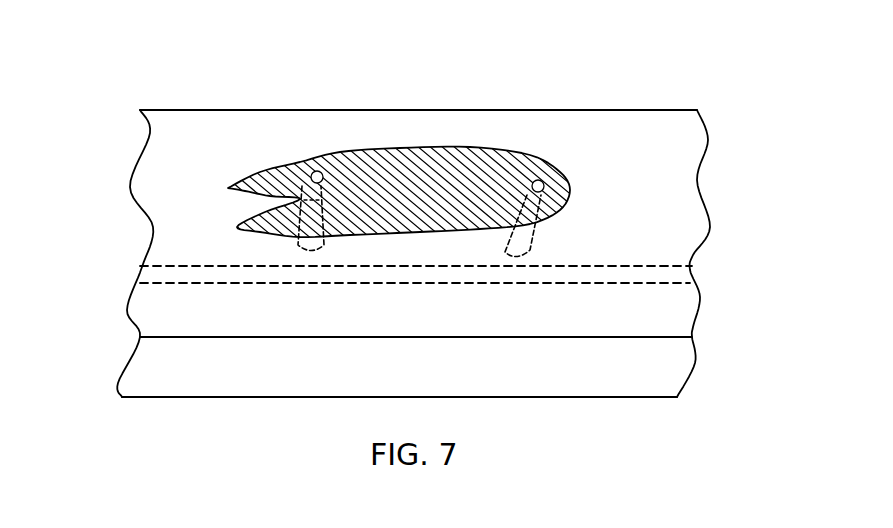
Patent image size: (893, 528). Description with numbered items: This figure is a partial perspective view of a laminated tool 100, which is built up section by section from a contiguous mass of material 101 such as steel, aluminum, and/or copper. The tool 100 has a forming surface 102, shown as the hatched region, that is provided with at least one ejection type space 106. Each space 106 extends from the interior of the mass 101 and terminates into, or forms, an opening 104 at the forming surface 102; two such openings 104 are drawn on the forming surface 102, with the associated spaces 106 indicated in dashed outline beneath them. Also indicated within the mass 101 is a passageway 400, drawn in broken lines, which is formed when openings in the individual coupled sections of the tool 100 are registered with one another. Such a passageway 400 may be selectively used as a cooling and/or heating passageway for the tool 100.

The laminated tool 100 is at (640, 78).
The contiguous mass of material 101 is at (220, 317).
The forming surface 102 is at (421, 207).
The opening 104 is at (314, 171).
The ejection type space 106 is at (308, 250).
The passageway 400 is at (178, 265).